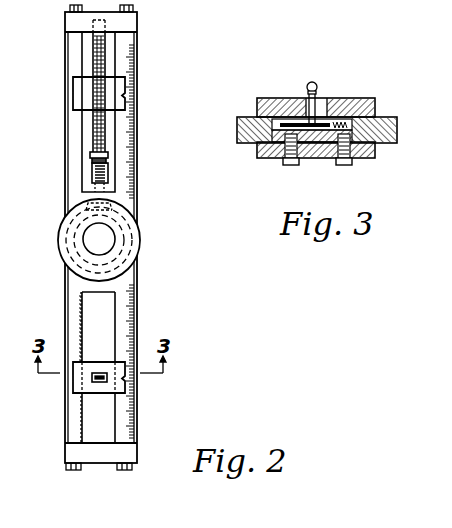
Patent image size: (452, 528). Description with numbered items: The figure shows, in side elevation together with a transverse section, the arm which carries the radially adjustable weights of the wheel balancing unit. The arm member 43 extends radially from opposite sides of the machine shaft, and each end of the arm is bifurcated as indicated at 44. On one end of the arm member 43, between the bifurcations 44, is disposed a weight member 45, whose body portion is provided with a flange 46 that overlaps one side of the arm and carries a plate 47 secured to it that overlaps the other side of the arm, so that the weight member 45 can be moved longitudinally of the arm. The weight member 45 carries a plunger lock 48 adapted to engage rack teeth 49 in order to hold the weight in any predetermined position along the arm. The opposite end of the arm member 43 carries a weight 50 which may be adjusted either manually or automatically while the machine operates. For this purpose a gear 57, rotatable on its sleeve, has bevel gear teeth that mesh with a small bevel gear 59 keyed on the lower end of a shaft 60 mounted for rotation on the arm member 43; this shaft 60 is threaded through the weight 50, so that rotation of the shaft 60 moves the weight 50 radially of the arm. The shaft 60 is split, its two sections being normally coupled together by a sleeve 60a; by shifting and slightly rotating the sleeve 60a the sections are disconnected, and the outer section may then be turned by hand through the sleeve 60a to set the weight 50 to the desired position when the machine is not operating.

In FIG. 2, the arm member 43 is at (133, 40).
In FIG. 3, the arm member 43 is at (383, 129).
In FIG. 2, the bifurcation 44 is at (108, 62).
In FIG. 2, the weight member 45 is at (107, 383).
In FIG. 3, the weight member 45 is at (342, 103).
In FIG. 3, the flange 46 is at (376, 108).
In FIG. 3, the plate 47 is at (365, 156).
In FIG. 3, the plunger lock 48 is at (316, 124).
In FIG. 2, the rack teeth 49 is at (80, 320).
In FIG. 3, the rack teeth 49 is at (281, 156).
In FIG. 2, the weight 50 is at (82, 95).
In FIG. 2, the gear 57 is at (123, 235).
In FIG. 2, the bevel gear 59 is at (108, 207).
In FIG. 2, the shaft 60 is at (100, 122).
In FIG. 2, the sleeve 60a is at (110, 177).